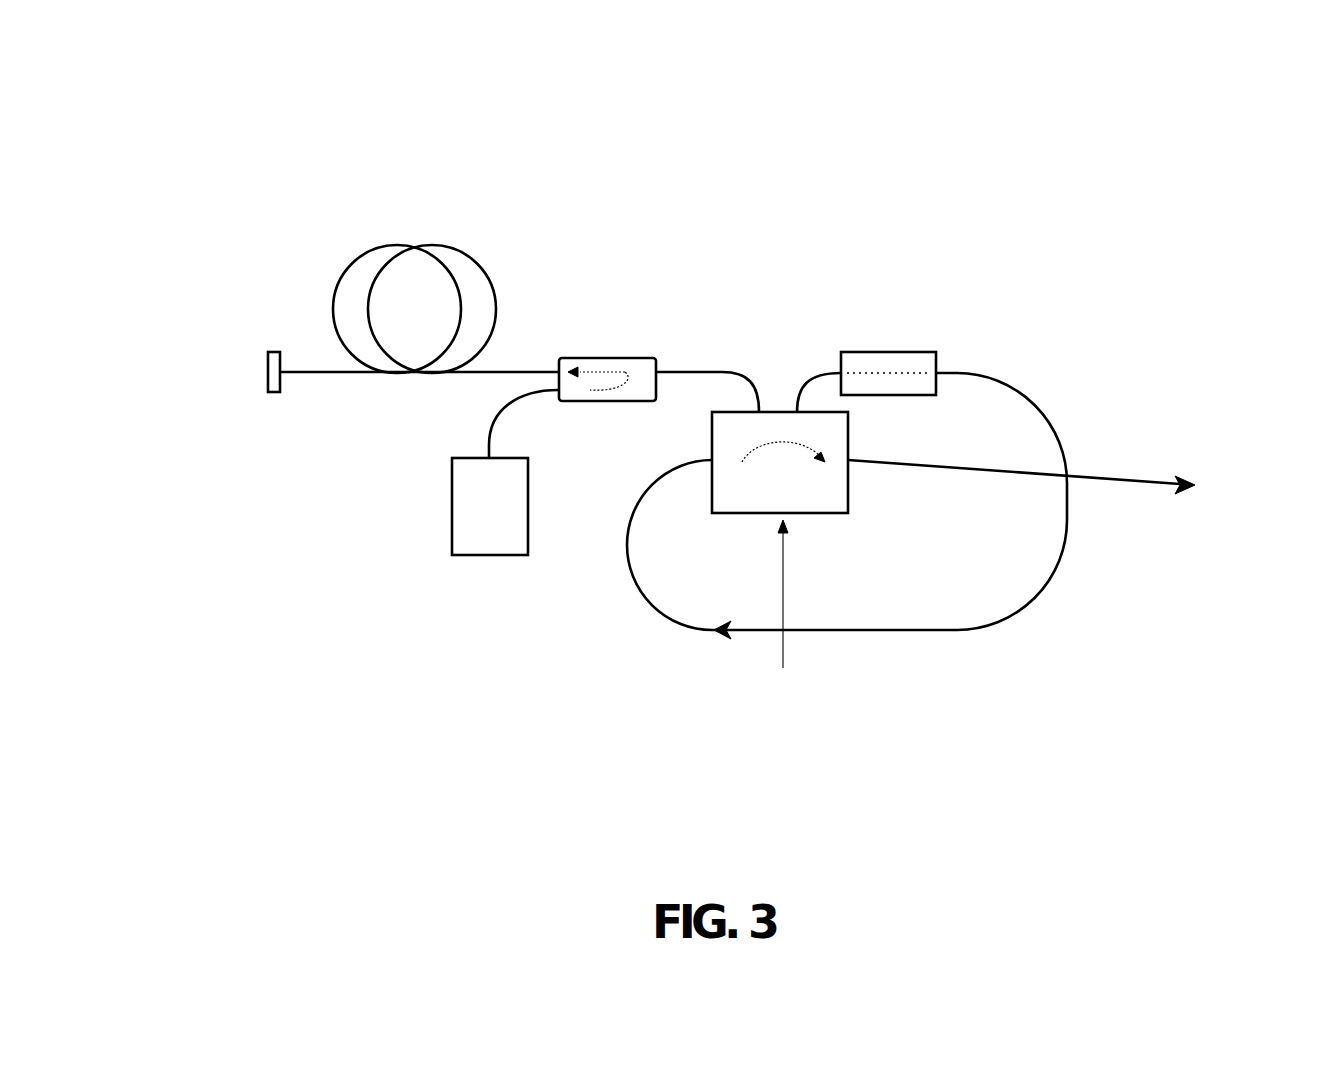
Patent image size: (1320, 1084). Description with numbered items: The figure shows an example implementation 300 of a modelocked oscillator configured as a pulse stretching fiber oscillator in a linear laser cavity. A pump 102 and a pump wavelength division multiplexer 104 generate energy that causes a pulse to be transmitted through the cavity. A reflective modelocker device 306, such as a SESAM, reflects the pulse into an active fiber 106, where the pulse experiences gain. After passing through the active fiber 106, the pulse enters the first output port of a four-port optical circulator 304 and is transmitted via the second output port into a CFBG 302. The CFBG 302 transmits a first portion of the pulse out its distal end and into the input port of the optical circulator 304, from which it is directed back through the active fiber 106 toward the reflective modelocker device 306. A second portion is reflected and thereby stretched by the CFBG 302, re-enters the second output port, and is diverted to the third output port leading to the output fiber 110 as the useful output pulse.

The example implementation 300 is at (233, 84).
The reflective modelocker device 306 is at (270, 448).
The active fiber 106 is at (415, 157).
The pump wavelength division multiplexer 104 is at (607, 277).
The pump 102 is at (490, 615).
The CFBG 302 is at (889, 297).
The optical circulator 304 is at (789, 760).
The output fiber 110 is at (1245, 458).